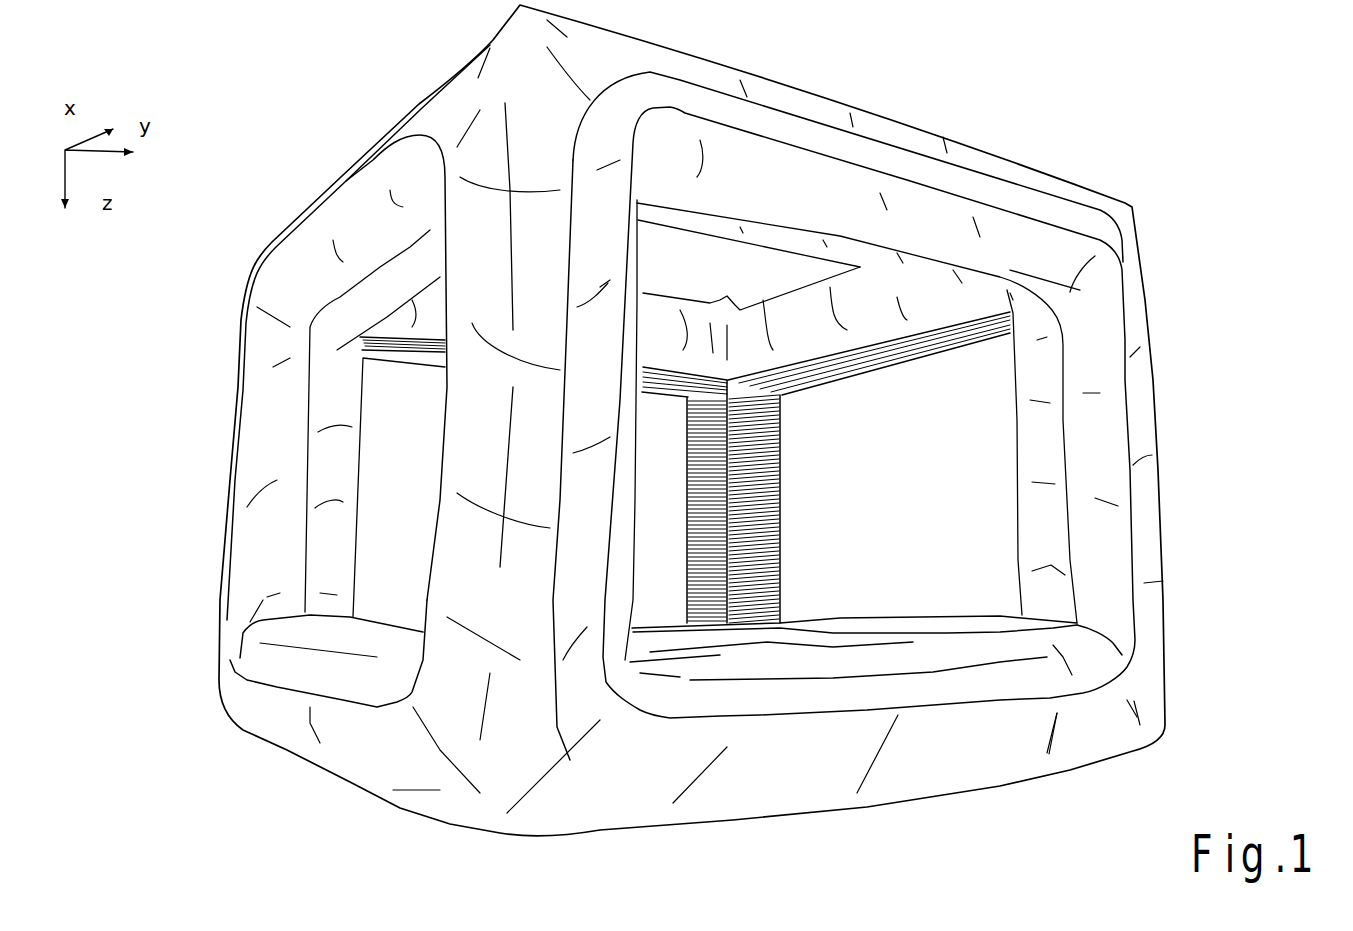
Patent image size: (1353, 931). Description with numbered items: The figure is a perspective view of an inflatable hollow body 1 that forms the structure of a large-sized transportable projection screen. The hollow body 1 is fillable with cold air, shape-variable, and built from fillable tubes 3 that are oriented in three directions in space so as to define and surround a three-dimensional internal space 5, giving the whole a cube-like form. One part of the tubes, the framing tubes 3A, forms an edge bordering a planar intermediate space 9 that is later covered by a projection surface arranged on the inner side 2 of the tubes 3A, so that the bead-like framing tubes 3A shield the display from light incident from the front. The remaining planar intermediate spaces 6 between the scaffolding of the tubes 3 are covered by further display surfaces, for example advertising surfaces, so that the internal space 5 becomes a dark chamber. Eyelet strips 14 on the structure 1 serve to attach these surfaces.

The hollow body 1 is at (1132, 207).
The inner side of the tubes 2 is at (653, 223).
The fillable tubes 3 is at (342, 176).
The framing tubes 3A is at (893, 112).
The internal space 5 is at (836, 462).
The planar intermediate spaces 6 is at (780, 285).
The planar intermediate space 9 is at (1003, 383).
The eyelet strips 14 is at (880, 398).